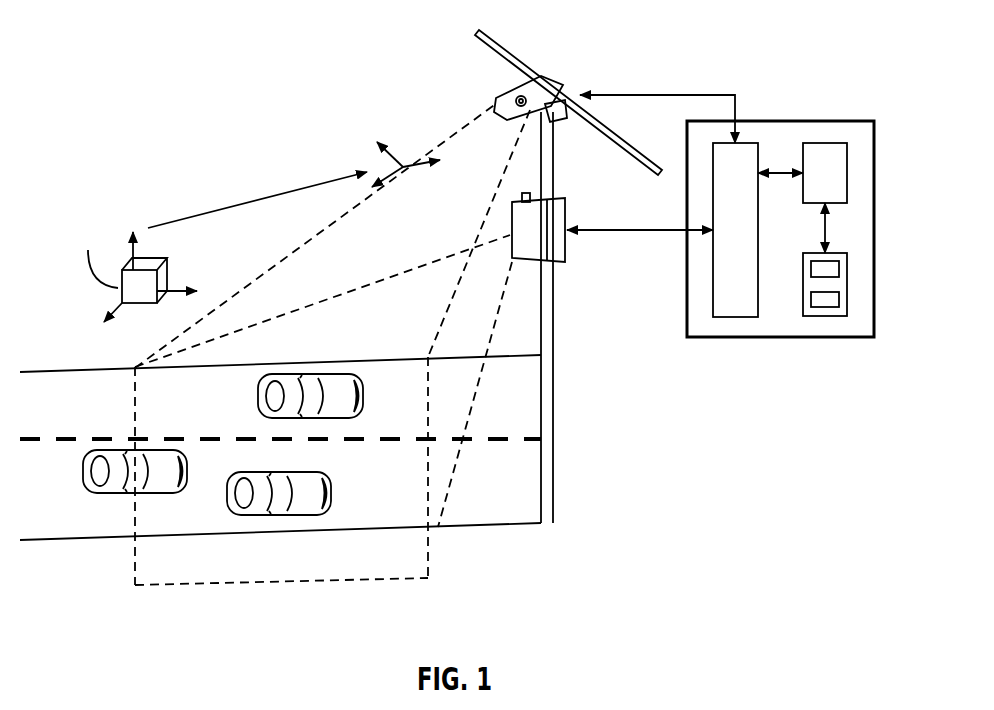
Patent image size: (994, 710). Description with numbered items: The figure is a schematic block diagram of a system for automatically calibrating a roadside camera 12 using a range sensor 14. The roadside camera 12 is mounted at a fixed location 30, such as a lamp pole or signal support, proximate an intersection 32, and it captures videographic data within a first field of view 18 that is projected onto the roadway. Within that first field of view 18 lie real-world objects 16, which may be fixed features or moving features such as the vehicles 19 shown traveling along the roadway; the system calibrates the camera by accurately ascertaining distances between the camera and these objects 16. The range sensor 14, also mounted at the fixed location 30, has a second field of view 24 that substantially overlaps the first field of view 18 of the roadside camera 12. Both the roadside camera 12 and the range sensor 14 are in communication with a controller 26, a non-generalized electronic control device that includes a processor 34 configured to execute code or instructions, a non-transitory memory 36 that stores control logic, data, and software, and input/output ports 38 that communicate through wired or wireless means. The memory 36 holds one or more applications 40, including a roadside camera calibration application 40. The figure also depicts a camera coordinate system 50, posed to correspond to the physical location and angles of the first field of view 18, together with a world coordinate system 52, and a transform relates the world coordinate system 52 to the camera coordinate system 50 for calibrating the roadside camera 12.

The roadside camera 12 is at (557, 78).
The range sensor 14 is at (567, 246).
The objects 16 is at (233, 473).
The first field of view 18 is at (468, 284).
The vehicles 19 is at (145, 493).
The second field of view 24 is at (488, 376).
The controller 26 is at (743, 211).
The fixed location 30 is at (571, 276).
The intersection 32 is at (500, 524).
The processor 34 is at (839, 190).
The memory 36 is at (839, 299).
The input/output port 38 is at (749, 245).
The application 40 is at (839, 269).
The camera coordinate system 50 is at (410, 150).
The world coordinate system 52 is at (116, 291).